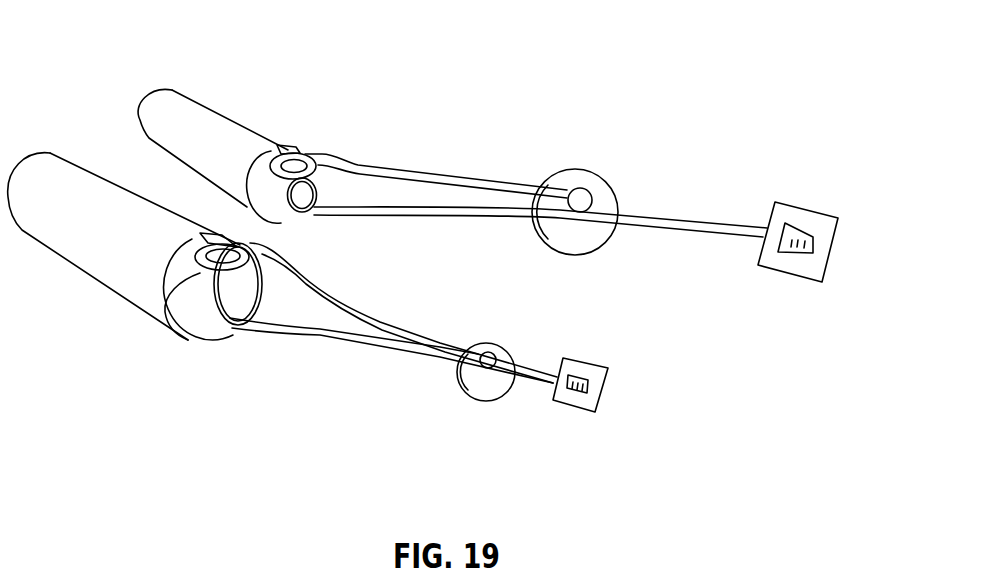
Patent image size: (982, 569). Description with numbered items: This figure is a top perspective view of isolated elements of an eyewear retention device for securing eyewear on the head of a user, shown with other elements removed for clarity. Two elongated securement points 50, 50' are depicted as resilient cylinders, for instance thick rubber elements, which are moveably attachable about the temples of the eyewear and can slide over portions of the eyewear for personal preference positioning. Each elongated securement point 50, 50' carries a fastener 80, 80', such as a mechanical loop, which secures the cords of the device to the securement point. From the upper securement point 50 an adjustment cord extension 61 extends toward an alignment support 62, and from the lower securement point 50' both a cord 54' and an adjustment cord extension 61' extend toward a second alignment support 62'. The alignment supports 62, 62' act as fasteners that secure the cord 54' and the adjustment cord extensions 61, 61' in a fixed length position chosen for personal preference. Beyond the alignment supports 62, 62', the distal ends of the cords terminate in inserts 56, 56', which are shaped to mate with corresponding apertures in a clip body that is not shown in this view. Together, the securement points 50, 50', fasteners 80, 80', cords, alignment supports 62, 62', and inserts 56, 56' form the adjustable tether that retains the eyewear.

The elongated securement point 50 is at (213, 116).
The fastener 80 is at (332, 118).
The adjustment cord extension 61 is at (528, 157).
The alignment support 62 is at (600, 181).
The insert 56 is at (812, 208).
The elongated securement point 50' is at (124, 258).
The fastener 80' is at (179, 308).
The adjustment cord extension 61' is at (385, 313).
The cord 54' is at (387, 362).
The alignment support 62' is at (527, 343).
The insert 56' is at (611, 353).